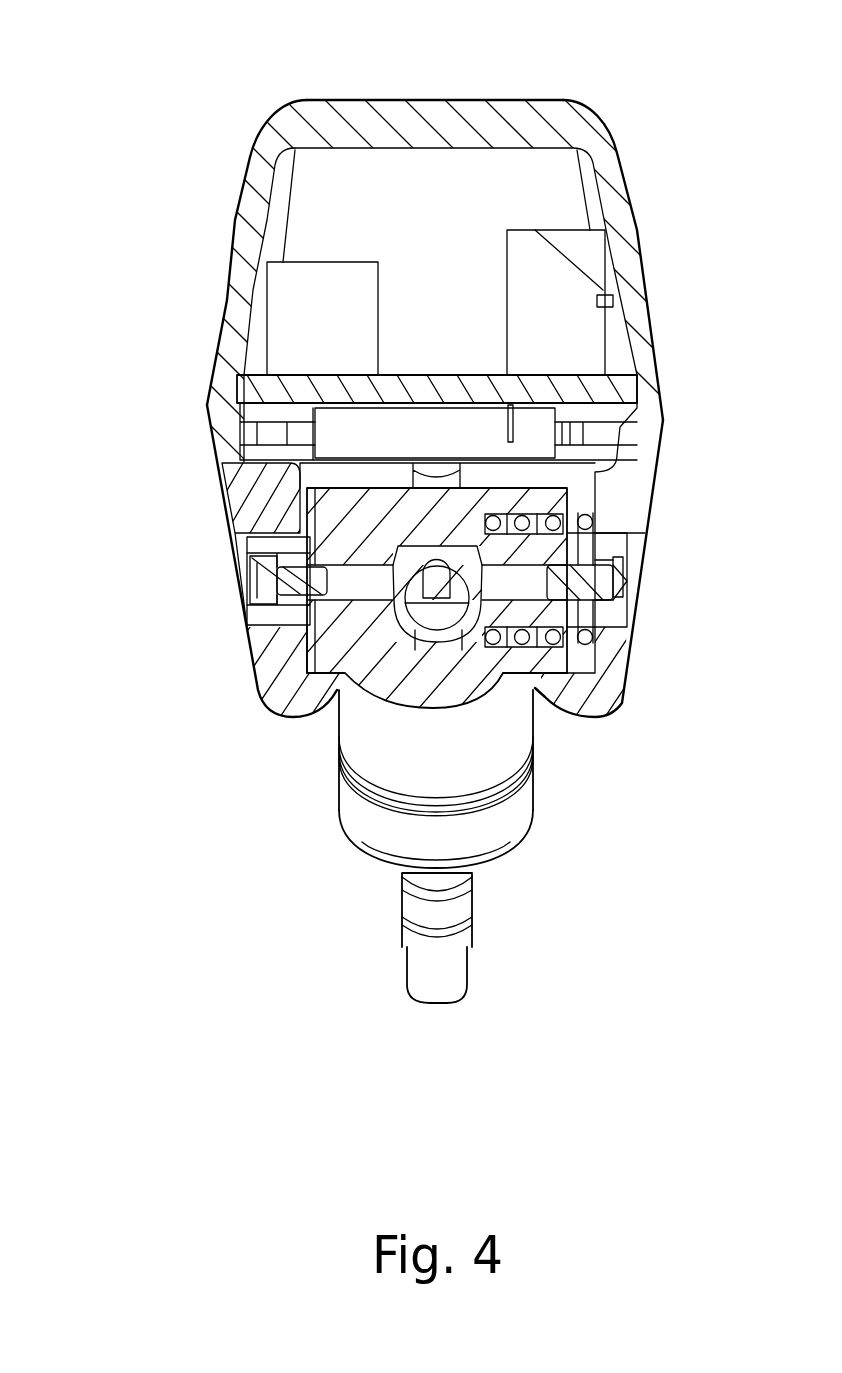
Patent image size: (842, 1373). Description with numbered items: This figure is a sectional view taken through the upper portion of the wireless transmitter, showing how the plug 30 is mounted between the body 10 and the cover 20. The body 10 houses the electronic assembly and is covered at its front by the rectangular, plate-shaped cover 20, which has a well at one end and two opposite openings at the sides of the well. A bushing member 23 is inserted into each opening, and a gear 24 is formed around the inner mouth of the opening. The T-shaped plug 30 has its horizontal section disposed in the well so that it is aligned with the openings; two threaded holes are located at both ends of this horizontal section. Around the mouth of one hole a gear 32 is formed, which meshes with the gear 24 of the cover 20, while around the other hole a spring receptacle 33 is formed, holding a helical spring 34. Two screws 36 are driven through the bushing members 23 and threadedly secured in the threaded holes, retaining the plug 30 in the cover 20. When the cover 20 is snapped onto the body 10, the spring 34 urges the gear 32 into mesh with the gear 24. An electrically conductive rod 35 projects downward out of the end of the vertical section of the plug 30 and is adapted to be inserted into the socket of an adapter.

The body 10 is at (400, 113).
The cover 20 is at (233, 468).
The bushing member 23 is at (608, 615).
The gear 24 is at (308, 663).
The plug 30 is at (365, 813).
The gear 32 is at (383, 649).
The spring receptacle 33 is at (540, 642).
The helical spring 34 is at (590, 642).
The electrically conductive rod 35 is at (453, 910).
The screw 36 is at (617, 572).